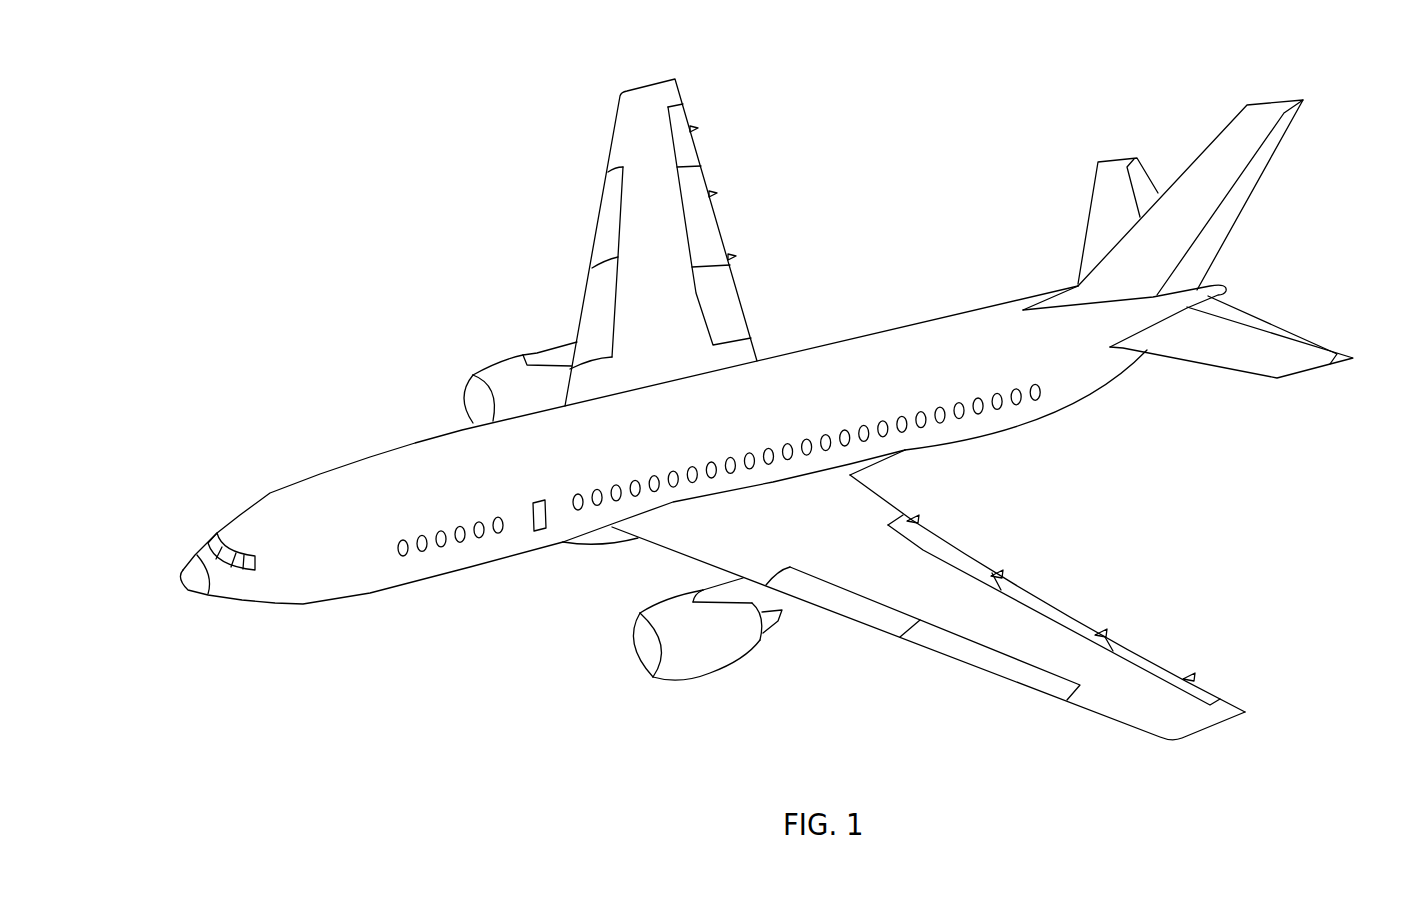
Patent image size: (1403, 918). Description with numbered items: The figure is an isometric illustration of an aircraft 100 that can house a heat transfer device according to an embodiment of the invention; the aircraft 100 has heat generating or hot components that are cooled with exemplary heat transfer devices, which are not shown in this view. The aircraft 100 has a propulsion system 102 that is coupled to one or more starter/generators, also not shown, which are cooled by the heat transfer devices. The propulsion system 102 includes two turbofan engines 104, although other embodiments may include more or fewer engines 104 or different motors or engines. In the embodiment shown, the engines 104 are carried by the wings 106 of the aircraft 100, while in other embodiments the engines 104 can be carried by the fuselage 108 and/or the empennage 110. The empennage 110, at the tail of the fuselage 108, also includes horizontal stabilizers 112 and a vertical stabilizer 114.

The aircraft 100 is at (319, 291).
The propulsion system 102 is at (519, 703).
The turbofan engines 104 is at (502, 372).
The wings 106 is at (612, 117).
The fuselage 108 is at (480, 553).
The empennage 110 is at (910, 253).
The horizontal stabilizers 112 is at (1110, 174).
The vertical stabilizer 114 is at (1242, 128).